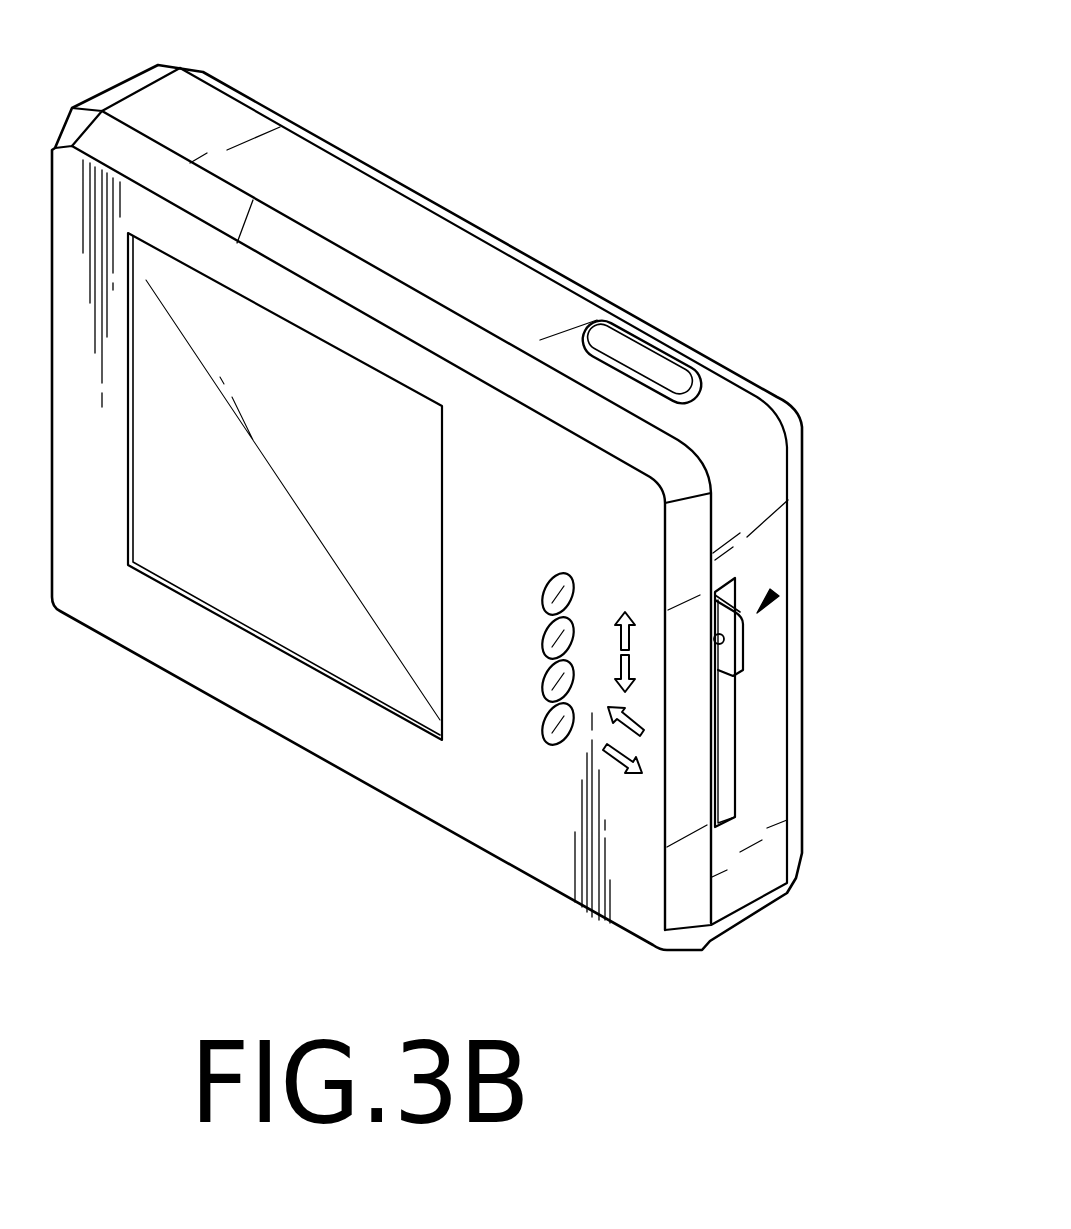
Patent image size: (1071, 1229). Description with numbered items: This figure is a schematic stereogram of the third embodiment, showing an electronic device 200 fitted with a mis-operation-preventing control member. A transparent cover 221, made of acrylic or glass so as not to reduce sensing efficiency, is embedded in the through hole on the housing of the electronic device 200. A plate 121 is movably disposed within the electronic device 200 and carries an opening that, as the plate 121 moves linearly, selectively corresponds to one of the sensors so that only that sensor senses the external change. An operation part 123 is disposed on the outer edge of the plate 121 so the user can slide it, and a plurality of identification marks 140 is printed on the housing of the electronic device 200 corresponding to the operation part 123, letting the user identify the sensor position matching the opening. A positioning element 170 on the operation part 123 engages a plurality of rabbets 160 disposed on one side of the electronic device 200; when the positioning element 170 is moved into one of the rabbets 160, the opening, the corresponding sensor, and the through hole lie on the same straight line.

The electronic device 200 is at (297, 172).
The transparent cover 221 is at (557, 575).
The plate 121 is at (779, 594).
The positioning element 170 is at (745, 641).
The operation part 123 is at (724, 643).
The identification marks 140 is at (632, 638).
The rabbets 160 is at (735, 772).